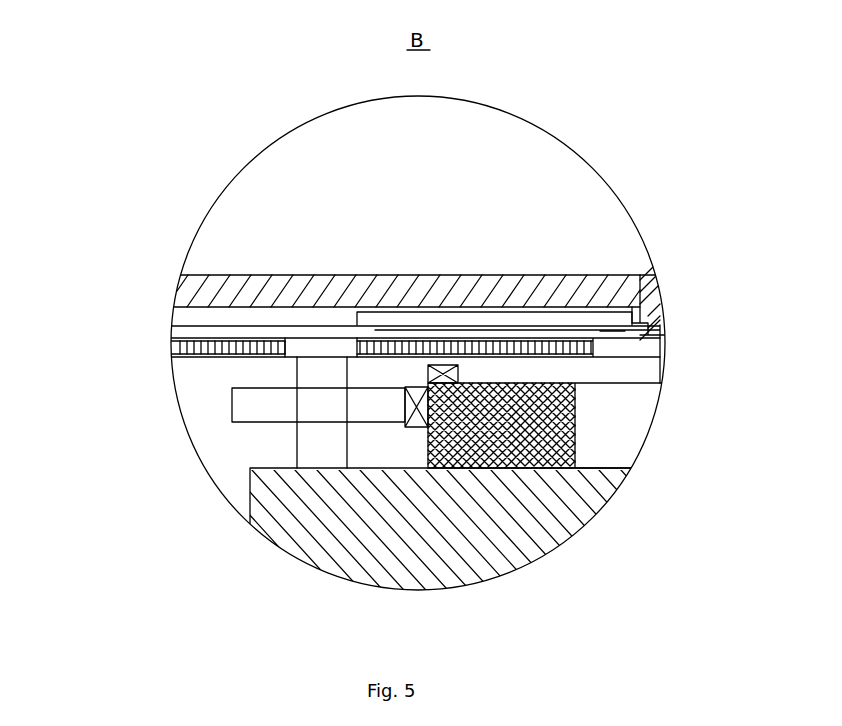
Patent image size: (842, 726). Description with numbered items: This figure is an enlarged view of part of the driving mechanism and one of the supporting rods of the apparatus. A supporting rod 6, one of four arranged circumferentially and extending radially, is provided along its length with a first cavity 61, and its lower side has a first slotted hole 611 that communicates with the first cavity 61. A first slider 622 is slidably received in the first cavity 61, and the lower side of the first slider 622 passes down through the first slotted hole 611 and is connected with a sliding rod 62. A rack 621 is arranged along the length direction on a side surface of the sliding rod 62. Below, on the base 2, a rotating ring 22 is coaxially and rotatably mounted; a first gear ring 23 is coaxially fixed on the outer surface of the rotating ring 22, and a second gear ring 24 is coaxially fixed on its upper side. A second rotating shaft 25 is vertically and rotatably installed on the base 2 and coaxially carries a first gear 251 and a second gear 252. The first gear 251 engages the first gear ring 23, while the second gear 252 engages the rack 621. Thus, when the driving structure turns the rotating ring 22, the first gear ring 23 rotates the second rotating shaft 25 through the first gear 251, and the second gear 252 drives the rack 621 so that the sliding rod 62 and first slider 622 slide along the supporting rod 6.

The base 2 is at (428, 540).
The rotating ring 22 is at (545, 480).
The first gear ring 23 is at (412, 427).
The second gear ring 24 is at (447, 365).
The second rotating shaft 25 is at (318, 450).
The first gear 251 is at (255, 408).
The second gear 252 is at (297, 345).
The supporting rod 6 is at (530, 276).
The first cavity 61 is at (642, 276).
The first slotted hole 611 is at (613, 332).
The sliding rod 62 is at (662, 335).
The rack 621 is at (176, 340).
The first slider 622 is at (414, 316).